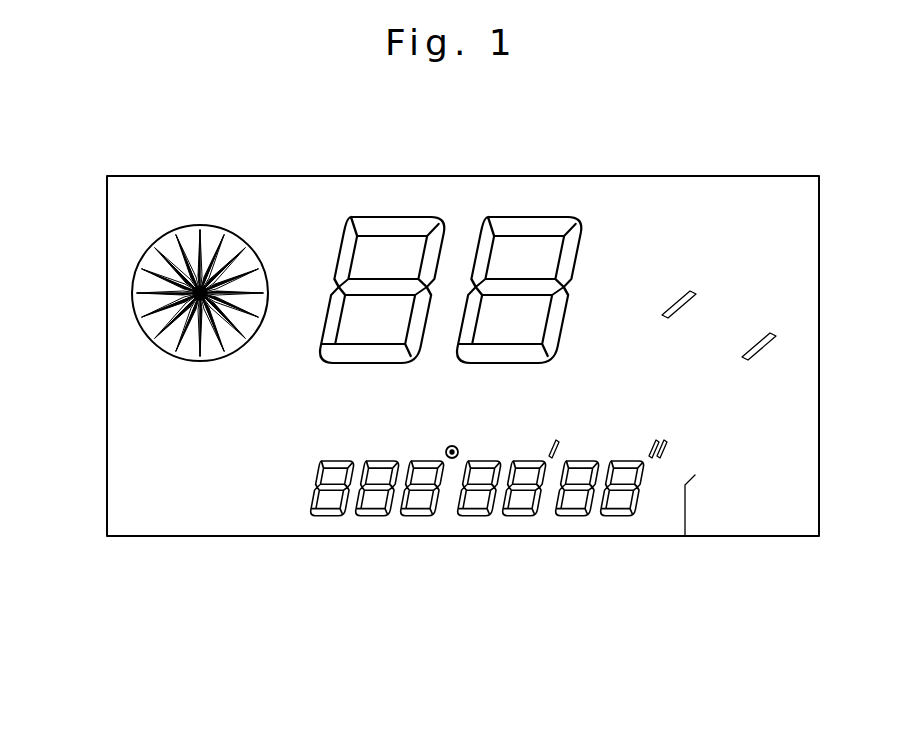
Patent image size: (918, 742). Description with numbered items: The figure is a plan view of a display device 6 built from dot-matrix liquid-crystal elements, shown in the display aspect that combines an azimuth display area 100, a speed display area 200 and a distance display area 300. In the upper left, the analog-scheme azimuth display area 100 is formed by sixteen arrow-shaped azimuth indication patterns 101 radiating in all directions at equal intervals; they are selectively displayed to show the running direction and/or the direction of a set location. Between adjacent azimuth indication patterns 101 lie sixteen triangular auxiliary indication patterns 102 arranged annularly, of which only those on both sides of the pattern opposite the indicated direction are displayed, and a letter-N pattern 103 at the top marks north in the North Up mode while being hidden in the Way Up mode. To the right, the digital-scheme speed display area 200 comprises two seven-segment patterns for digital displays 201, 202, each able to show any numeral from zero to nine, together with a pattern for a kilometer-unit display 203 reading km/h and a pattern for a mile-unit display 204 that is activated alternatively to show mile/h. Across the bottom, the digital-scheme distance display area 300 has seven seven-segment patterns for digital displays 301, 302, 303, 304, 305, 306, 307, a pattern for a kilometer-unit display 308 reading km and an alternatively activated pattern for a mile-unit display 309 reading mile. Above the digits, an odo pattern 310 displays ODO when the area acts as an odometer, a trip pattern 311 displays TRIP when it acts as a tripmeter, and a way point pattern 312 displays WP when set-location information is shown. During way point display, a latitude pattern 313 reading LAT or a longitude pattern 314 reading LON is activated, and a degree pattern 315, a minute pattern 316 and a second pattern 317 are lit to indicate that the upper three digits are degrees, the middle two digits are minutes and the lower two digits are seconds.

The display device 6 is at (303, 176).
The azimuth display area 100 is at (134, 196).
The azimuth indication patterns 101 is at (172, 262).
The auxiliary indication patterns 102 is at (142, 303).
The letter-N pattern 103 is at (193, 192).
The speed display area 200 is at (619, 219).
The pattern for digital display 201 is at (395, 225).
The pattern for digital display 202 is at (540, 227).
The pattern for kilometer-unit display 203 is at (648, 300).
The pattern for mile-unit display 204 is at (725, 338).
The distance display area 300 is at (169, 476).
The pattern for digital display 301 is at (323, 517).
The pattern for digital display 302 is at (378, 517).
The pattern for digital display 303 is at (417, 517).
The pattern for digital display 304 is at (485, 517).
The pattern for digital display 305 is at (522, 517).
The pattern for digital display 306 is at (573, 517).
The pattern for digital display 307 is at (618, 517).
The pattern for kilometer-unit display 308 is at (688, 535).
The pattern for mile-unit display 309 is at (738, 505).
The odo pattern 310 is at (413, 408).
The trip pattern 311 is at (688, 418).
The way point pattern 312 is at (290, 412).
The latitude pattern 313 is at (212, 478).
The longitude pattern 314 is at (243, 522).
The degree pattern 315 is at (452, 458).
The minute pattern 316 is at (552, 458).
The second pattern 317 is at (658, 457).